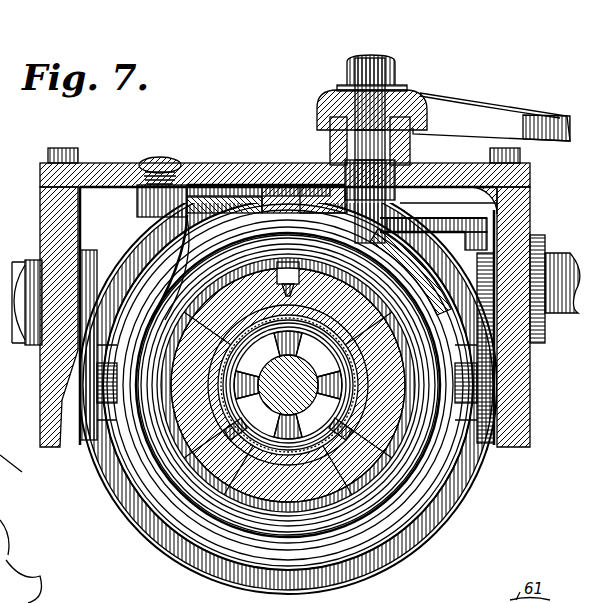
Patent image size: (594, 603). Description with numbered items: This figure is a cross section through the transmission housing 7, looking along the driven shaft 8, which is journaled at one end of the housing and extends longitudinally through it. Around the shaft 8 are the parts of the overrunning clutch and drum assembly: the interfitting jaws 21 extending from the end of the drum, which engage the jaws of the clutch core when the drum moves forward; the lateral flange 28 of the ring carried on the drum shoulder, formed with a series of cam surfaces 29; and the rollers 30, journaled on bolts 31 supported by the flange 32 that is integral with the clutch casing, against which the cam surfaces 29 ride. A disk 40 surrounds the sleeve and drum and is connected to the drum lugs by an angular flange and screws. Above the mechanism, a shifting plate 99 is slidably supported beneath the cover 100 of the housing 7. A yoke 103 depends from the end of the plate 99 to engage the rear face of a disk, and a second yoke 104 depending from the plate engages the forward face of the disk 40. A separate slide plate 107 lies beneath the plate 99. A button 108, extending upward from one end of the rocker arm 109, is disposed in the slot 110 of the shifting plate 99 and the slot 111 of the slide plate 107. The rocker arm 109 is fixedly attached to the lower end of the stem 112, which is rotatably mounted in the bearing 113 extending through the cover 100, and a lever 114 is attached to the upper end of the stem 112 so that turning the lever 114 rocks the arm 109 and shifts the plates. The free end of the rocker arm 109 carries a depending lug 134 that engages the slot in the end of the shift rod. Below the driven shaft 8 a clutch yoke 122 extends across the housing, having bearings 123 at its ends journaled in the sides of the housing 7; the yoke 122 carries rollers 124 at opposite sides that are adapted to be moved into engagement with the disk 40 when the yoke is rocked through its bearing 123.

The transmission housing 7 is at (46, 380).
The driven shaft 8 is at (284, 364).
The interfitting jaws 21 is at (238, 522).
The lateral flange 28 is at (342, 445).
The cam surfaces 29 is at (343, 323).
The rollers 30 is at (352, 422).
The bolts 31 is at (120, 500).
The flange 32 is at (190, 502).
The disk 40 is at (138, 462).
The shifting plate 99 is at (167, 160).
The cover 100 is at (103, 165).
The yoke 103 is at (135, 318).
The second yoke 104 is at (378, 254).
The slide plate 107 is at (186, 224).
The button 108 is at (256, 192).
The rocker arm 109 is at (185, 247).
The slot 110 is at (232, 186).
The slot 111 is at (190, 200).
The stem 112 is at (378, 128).
The bearing 113 is at (318, 126).
The lever 114 is at (472, 118).
The clutch yoke 122 is at (470, 483).
The bearings 123 is at (498, 275).
The rollers 124 is at (98, 402).
The lug 134 is at (472, 240).